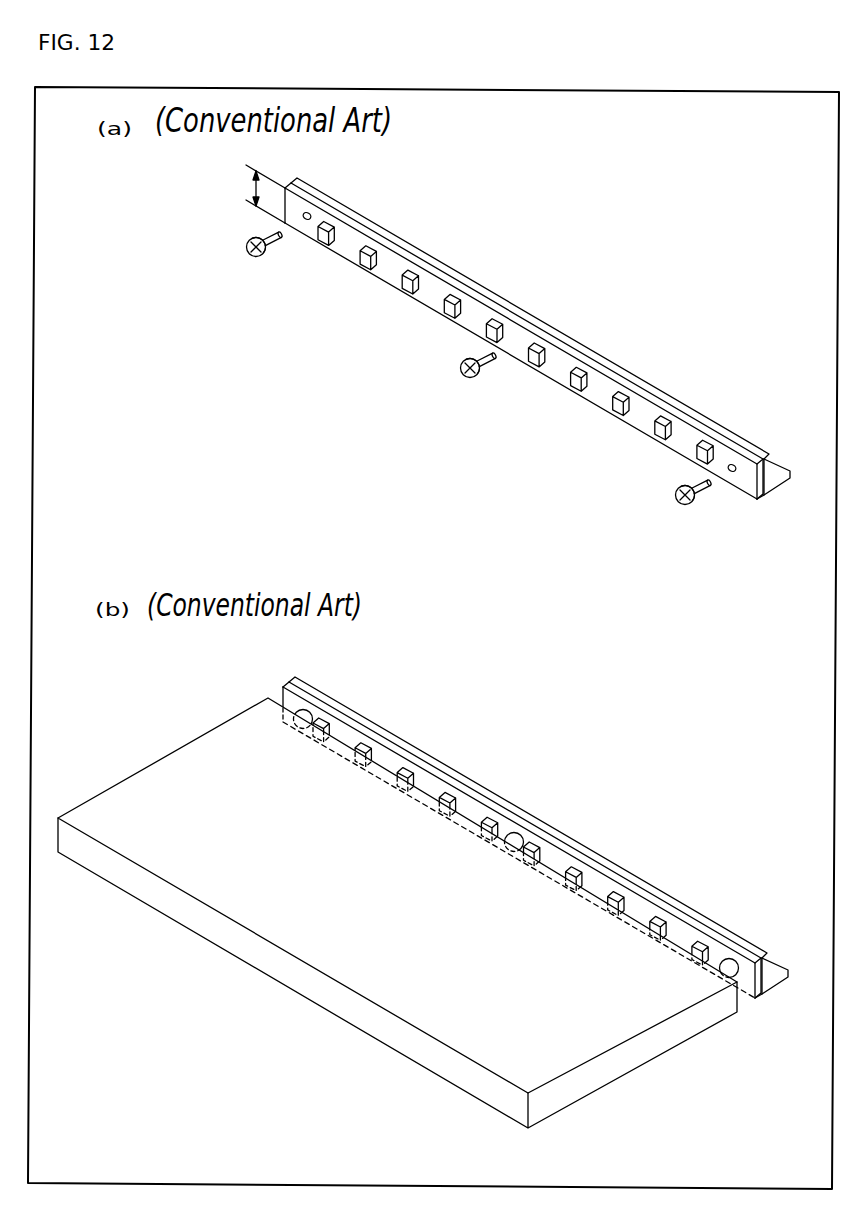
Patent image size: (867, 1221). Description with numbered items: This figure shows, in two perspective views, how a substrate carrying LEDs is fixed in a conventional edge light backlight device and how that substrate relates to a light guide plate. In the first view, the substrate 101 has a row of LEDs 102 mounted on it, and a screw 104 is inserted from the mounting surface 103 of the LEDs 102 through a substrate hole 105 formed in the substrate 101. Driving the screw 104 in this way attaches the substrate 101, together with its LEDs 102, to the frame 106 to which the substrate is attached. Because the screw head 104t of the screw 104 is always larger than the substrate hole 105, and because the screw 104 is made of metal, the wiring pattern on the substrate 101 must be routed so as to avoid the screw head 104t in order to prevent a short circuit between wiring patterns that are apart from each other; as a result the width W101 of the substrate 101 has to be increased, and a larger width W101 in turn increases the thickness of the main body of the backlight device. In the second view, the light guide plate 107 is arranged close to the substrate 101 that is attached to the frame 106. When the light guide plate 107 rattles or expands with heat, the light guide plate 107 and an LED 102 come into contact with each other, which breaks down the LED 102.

The width of the substrate W101 is at (253, 189).
The substrate 101 is at (558, 372).
The LED 102 is at (537, 338).
The mounting surface 103 is at (380, 292).
The screw 104 is at (252, 257).
The screw head 104t is at (678, 507).
The substrate hole 105 is at (727, 468).
The frame 106 is at (773, 467).
The light guide plate 107 is at (135, 797).